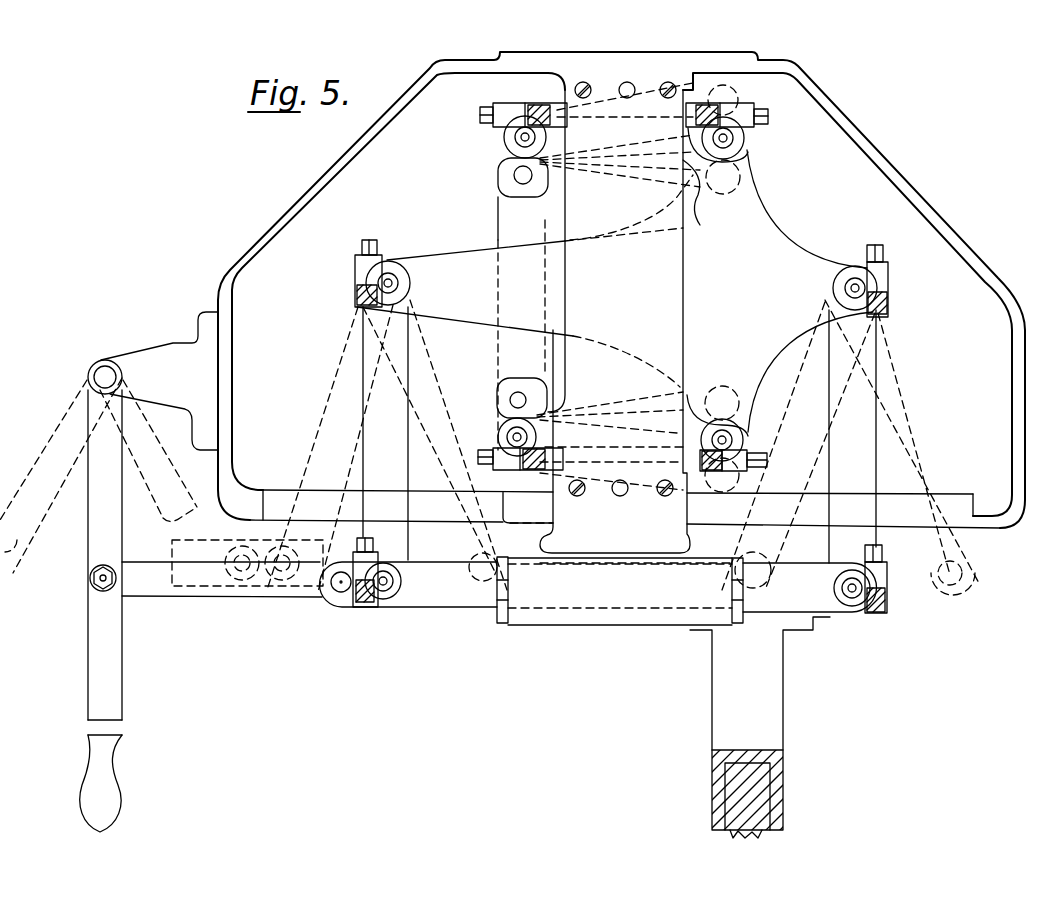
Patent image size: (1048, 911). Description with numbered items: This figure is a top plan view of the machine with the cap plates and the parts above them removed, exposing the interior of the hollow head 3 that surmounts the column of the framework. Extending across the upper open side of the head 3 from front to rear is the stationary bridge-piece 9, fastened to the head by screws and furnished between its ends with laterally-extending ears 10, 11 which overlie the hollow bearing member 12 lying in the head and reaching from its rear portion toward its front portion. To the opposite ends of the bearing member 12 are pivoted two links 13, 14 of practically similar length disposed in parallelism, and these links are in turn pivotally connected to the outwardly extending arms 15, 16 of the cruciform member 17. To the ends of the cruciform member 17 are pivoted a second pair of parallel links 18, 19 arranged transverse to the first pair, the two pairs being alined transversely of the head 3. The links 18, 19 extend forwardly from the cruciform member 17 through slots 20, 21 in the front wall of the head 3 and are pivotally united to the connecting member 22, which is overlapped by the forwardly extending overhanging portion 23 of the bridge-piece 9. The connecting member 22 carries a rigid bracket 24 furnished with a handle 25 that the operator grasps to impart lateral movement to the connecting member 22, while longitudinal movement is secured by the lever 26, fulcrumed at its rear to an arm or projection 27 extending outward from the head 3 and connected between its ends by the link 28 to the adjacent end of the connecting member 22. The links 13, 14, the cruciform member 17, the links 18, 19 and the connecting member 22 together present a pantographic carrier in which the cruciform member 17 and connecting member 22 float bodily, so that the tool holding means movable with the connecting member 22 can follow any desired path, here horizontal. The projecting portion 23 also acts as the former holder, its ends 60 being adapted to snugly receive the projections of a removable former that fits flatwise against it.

The hollow head 3 is at (920, 170).
The bridge-piece 9 is at (672, 292).
The laterally-extending ear 10 is at (521, 377).
The laterally-extending ear 11 is at (522, 196).
The hollow bearing member 12 is at (505, 229).
The link 13 is at (686, 398).
The link 14 is at (690, 192).
The outwardly extending arm 15 is at (755, 418).
The outwardly extending arm 16 is at (748, 153).
The cruciform member 17 is at (760, 260).
The link 18 is at (878, 372).
The link 19 is at (410, 390).
The slot 20 is at (851, 458).
The slot 21 is at (410, 607).
The connecting member 22 is at (455, 600).
The overhanging portion 23 is at (597, 615).
The rigid bracket 24 is at (783, 763).
The handle 25 is at (762, 838).
The lever 26 is at (122, 665).
The arm or projection 27 is at (150, 357).
The link 28 is at (238, 600).
The end 60 is at (493, 617).